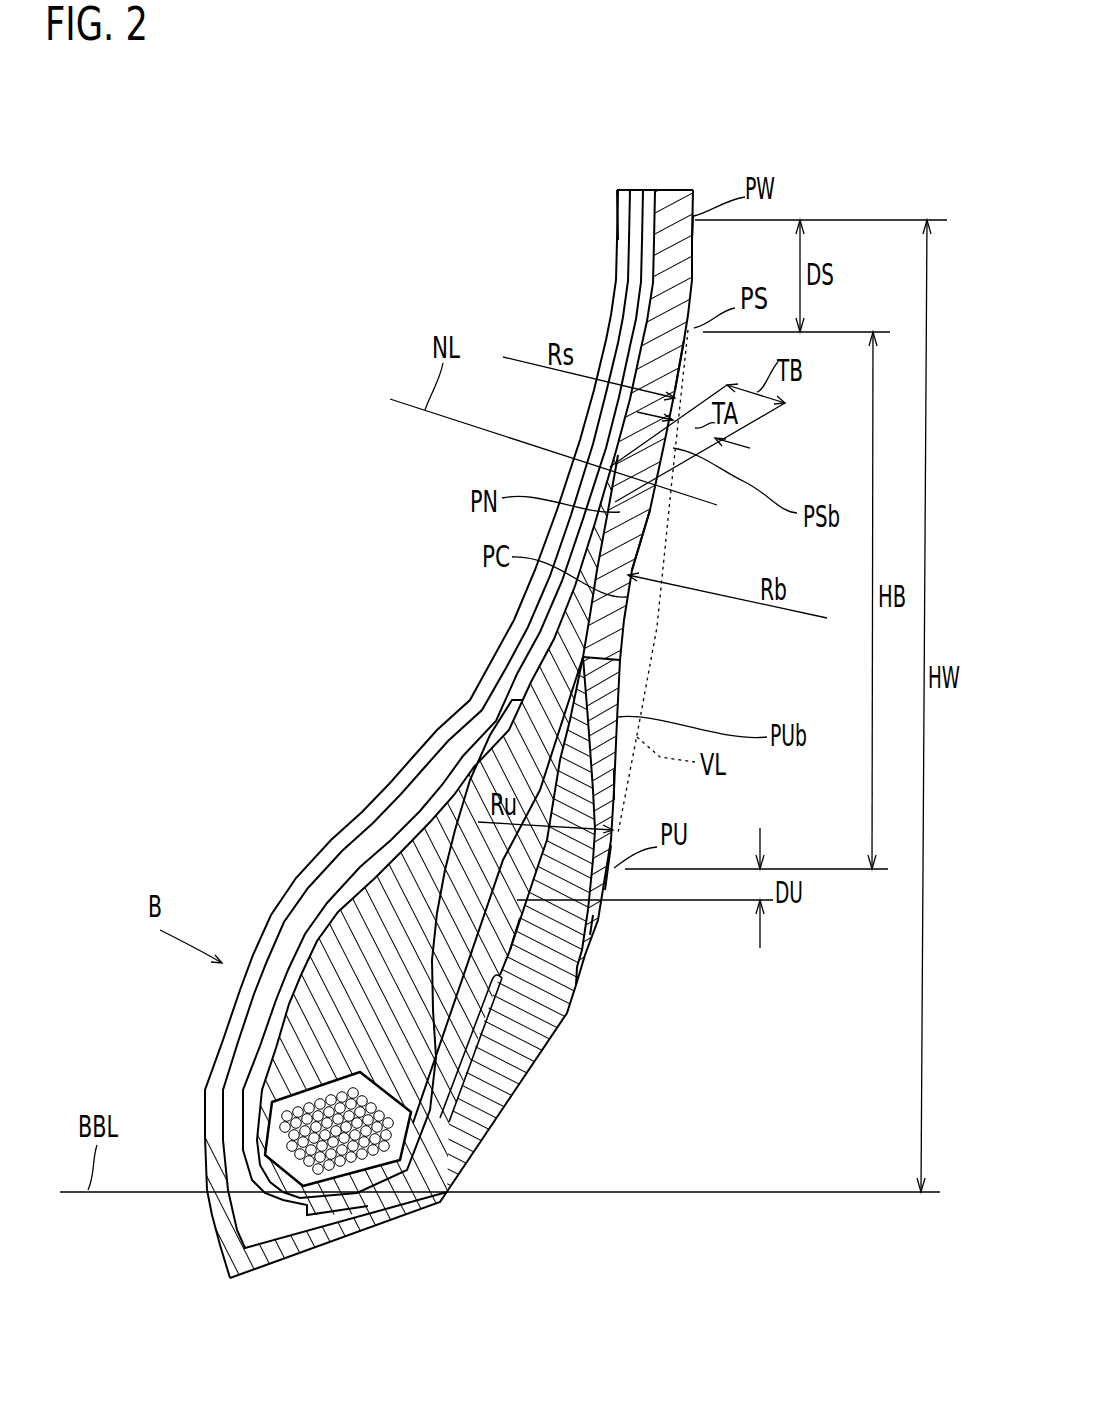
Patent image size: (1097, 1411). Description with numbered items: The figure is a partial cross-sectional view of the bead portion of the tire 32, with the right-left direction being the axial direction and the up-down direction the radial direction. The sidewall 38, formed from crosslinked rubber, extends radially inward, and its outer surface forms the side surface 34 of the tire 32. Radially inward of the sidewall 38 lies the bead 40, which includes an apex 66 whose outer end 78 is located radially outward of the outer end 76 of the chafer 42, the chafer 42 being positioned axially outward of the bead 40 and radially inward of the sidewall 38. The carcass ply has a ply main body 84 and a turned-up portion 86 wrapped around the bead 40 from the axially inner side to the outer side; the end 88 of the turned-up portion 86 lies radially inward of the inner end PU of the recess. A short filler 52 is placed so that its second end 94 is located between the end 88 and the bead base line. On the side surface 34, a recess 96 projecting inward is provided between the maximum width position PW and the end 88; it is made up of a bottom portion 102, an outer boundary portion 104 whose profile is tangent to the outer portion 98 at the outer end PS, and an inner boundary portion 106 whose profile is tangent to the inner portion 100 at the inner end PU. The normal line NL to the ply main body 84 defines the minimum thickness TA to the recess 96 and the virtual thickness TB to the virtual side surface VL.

The tire 32 is at (328, 255).
The side surface 34 is at (693, 229).
The sidewall 38 is at (675, 247).
The bead 40 is at (347, 897).
The chafer 42 is at (510, 1047).
The filler 52 is at (447, 1090).
The apex 66 is at (463, 772).
The outer end of the chafer 76 is at (621, 663).
The outer end of the apex 78 is at (618, 452).
The ply main body 84 is at (394, 837).
The turned-up portion 86 is at (498, 928).
The end of the turned-up portion 88 is at (510, 897).
The second end of the filler 94 is at (510, 960).
The recess 96 is at (621, 635).
The outer portion 98 is at (692, 262).
The inner portion 100 is at (595, 925).
The bottom portion 102 is at (639, 538).
The outer boundary portion 104 is at (689, 378).
The inner boundary portion 106 is at (616, 783).